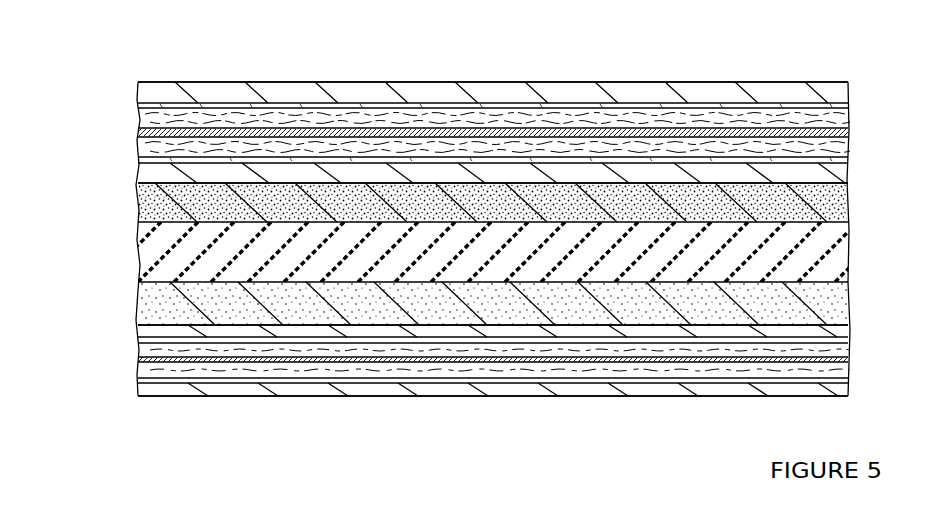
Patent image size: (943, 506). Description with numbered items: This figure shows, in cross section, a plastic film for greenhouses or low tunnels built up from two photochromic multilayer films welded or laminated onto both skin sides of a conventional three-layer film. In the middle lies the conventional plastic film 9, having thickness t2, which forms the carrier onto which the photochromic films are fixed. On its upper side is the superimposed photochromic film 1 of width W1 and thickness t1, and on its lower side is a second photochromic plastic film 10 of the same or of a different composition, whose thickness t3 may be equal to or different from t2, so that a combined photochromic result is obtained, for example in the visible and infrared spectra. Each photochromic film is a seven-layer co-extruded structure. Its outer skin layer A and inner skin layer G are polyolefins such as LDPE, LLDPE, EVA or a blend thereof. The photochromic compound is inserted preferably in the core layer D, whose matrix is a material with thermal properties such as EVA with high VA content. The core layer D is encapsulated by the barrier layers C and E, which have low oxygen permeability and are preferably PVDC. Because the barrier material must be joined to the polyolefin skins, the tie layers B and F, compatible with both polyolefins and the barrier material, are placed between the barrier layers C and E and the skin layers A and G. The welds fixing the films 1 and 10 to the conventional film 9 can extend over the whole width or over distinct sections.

The superimposed photochromic film 1 is at (433, 132).
The conventional plastic film 9 is at (456, 254).
The second photochromic plastic film 10 is at (433, 360).
The skin layer A is at (851, 89).
The tie layer B is at (851, 104).
The barrier layer C is at (851, 117).
The core layer D is at (851, 132).
The barrier layer E is at (851, 147).
The tie layer F is at (851, 160).
The skin layer G is at (851, 173).
The width W1 is at (848, 82).
The thickness t1 is at (35, 82).
The thickness t2 is at (22, 183).
The thickness t3 is at (35, 395).